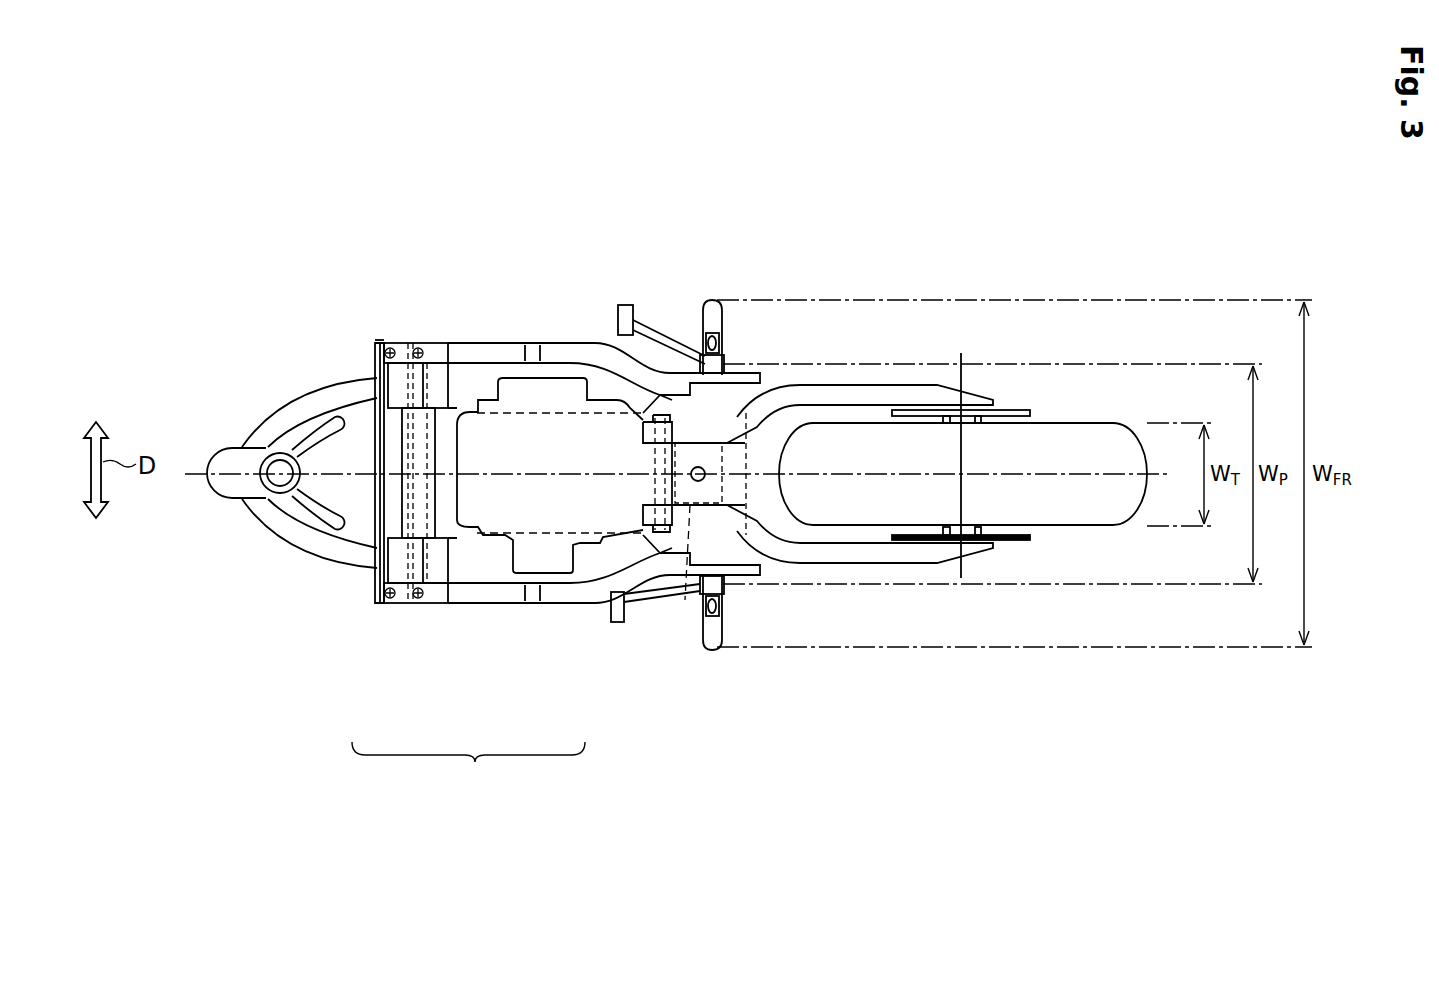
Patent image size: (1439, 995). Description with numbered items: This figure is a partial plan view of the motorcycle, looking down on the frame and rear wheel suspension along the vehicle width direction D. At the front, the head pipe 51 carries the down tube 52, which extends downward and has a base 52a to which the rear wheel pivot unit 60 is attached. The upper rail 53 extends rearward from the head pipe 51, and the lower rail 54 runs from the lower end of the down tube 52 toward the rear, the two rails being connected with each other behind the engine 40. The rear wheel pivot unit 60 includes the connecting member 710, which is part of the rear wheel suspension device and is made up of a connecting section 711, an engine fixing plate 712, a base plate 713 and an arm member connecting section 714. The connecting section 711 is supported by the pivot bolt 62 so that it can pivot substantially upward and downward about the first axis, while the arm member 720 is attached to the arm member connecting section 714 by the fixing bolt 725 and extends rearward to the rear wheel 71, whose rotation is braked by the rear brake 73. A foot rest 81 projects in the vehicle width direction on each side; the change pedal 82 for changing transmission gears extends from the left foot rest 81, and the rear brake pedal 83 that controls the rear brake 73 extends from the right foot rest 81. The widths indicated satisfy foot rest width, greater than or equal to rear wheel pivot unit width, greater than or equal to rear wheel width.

The engine 40 is at (565, 378).
The head pipe 51 is at (230, 455).
The down tube 52 is at (290, 410).
The base 52a is at (378, 343).
The upper rail 53 is at (328, 418).
The lower rail 54 is at (532, 352).
The rear wheel pivot unit 60 is at (440, 347).
The pivot bolt 62 is at (415, 348).
The rear wheel 71 is at (1097, 512).
The rear brake 73 is at (1028, 410).
The foot rest 81 is at (712, 300).
The change pedal 82 is at (620, 622).
The rear brake pedal 83 is at (627, 305).
The connecting member 710 is at (468, 768).
The connecting section 711 is at (378, 525).
The engine fixing plate 712 is at (460, 400).
The base plate 713 is at (515, 570).
The arm member connecting section 714 is at (685, 600).
The arm member 720 is at (872, 566).
The fixing bolt 725 is at (700, 480).